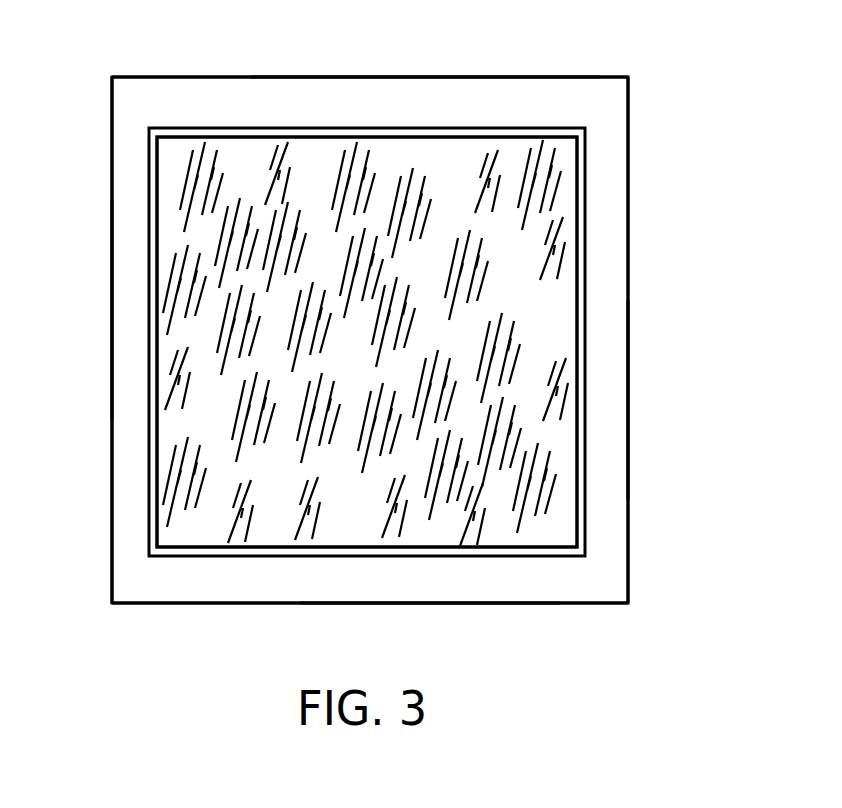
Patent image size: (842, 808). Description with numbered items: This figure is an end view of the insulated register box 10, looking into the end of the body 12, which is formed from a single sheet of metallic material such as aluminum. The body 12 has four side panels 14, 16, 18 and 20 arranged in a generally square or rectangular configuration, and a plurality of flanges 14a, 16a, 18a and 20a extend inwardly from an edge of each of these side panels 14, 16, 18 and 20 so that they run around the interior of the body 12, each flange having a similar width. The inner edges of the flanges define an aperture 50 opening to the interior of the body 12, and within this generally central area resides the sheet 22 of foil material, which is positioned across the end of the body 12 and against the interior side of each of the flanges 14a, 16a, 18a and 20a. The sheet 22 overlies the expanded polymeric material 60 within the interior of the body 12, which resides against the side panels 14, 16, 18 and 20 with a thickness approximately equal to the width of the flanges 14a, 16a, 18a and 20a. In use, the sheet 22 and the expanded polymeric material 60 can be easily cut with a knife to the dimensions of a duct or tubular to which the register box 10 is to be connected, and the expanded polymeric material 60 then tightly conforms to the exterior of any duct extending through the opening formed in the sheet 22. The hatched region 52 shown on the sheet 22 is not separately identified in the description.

The insulated register box 10 is at (686, 55).
The body 12 is at (630, 148).
The side panel 14 is at (630, 374).
The flange 14a is at (622, 412).
The side panel 16 is at (437, 603).
The flange 16a is at (538, 588).
The side panel 18 is at (112, 335).
The flange 18a is at (125, 297).
The side panel 20 is at (358, 76).
The flange 20a is at (528, 92).
The sheet 22 is at (167, 447).
The aperture 50 is at (157, 241).
The filter media surface 52 is at (203, 530).
The expanded polymeric material 60 is at (548, 492).